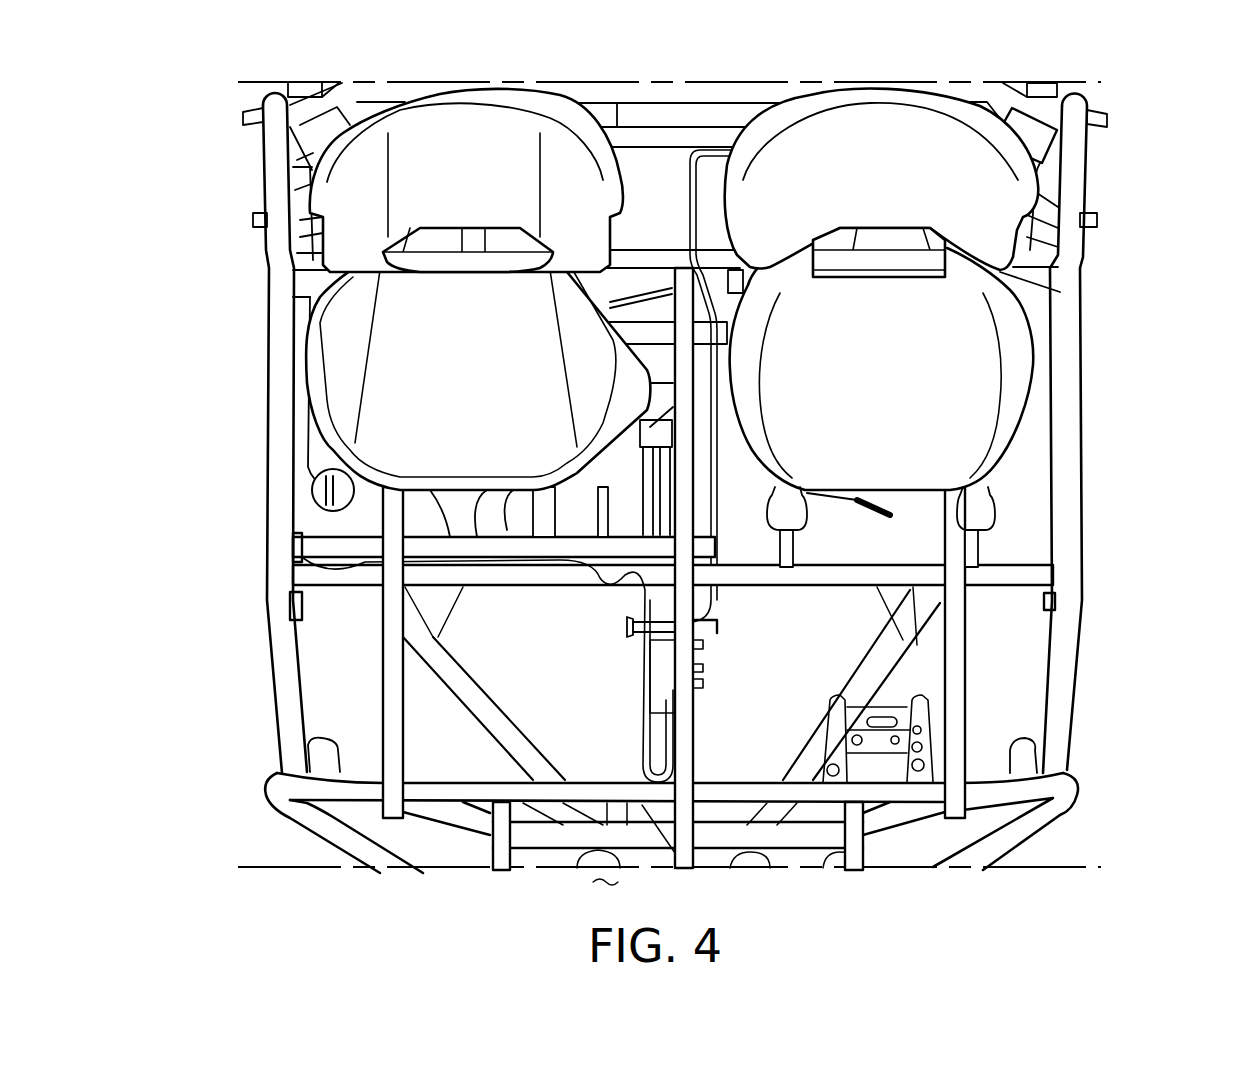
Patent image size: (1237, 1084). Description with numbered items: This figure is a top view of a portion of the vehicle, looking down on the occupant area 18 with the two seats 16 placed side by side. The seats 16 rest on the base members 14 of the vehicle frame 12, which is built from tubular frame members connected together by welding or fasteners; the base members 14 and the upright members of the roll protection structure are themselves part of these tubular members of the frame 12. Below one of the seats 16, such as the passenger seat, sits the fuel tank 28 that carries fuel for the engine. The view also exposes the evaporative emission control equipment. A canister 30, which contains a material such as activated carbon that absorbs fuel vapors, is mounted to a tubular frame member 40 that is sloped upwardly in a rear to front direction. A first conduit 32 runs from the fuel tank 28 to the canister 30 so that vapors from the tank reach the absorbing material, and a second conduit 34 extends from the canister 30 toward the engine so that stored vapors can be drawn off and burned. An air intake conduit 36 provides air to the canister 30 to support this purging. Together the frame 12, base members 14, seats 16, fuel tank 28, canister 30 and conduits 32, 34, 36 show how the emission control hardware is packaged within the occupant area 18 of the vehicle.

The vehicle frame 12 is at (1078, 691).
The base members 14 is at (1078, 363).
The seat 16 is at (505, 130).
The occupant area 18 is at (1145, 271).
The fuel tank 28 is at (323, 463).
The canister 30 is at (693, 672).
The first conduit 32 is at (630, 620).
The second conduit 34 is at (717, 548).
The air intake conduit 36 is at (650, 812).
The tubular frame member 40 is at (693, 733).